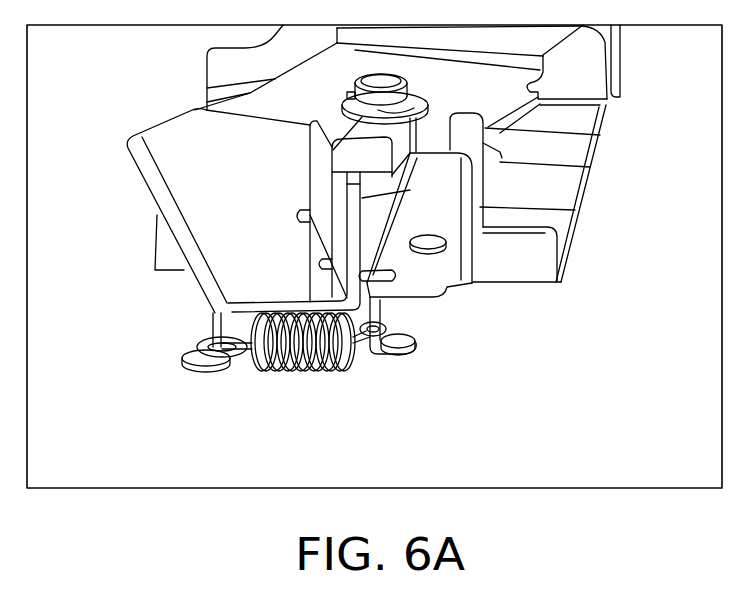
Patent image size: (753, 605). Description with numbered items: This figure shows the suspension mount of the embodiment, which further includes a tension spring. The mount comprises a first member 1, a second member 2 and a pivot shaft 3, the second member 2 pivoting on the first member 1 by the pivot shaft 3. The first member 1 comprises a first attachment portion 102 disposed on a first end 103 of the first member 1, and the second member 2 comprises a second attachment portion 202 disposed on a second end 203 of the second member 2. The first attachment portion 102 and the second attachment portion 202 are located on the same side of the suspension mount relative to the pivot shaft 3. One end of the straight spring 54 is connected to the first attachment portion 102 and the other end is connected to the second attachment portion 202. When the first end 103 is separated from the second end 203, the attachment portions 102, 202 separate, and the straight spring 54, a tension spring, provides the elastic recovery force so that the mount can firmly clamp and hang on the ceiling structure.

The first member 1 is at (555, 190).
The second member 2 is at (230, 215).
The pivot shaft 3 is at (388, 83).
The straight spring 54 is at (300, 370).
The first attachment portion 102 is at (387, 352).
The first end 103 is at (447, 273).
The second attachment portion 202 is at (203, 366).
The second end 203 is at (262, 280).